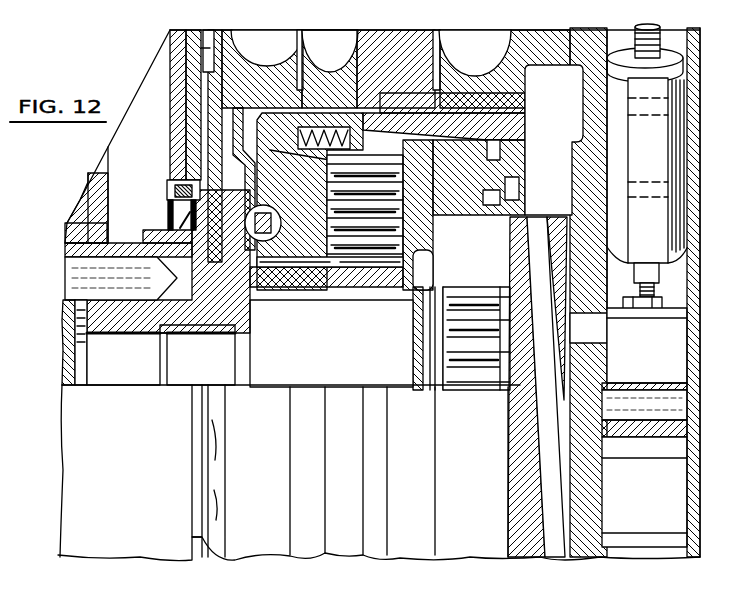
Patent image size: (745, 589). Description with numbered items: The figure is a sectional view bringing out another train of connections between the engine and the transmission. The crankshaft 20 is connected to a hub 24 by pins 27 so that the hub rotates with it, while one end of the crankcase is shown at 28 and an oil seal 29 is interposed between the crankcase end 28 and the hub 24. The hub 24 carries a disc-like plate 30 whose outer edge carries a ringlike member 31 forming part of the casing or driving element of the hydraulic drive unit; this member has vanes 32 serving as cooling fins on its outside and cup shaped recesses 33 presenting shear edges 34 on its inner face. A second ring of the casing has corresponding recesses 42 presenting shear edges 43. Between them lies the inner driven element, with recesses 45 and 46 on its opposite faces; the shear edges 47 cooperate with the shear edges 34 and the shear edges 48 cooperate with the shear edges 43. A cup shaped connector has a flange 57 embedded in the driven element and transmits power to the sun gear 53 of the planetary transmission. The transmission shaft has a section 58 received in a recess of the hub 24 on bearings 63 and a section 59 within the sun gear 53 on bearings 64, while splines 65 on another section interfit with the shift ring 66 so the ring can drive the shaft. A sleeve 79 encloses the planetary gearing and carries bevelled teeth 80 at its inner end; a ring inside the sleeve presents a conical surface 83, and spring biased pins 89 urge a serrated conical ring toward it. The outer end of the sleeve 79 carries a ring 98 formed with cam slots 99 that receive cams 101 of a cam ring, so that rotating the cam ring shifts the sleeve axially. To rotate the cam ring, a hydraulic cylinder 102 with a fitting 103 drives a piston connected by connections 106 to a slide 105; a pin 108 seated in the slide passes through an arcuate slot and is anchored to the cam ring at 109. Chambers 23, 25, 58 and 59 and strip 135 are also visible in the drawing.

The crankshaft 20 is at (66, 320).
The chamber 23 is at (123, 359).
The hub 24 is at (127, 250).
The plate 25 is at (138, 335).
The pins 27 is at (70, 268).
The crankcase end 28 is at (173, 127).
The oil seal 29 is at (170, 200).
The disc-like plate 30 is at (213, 92).
The ringlike member 31 is at (215, 30).
The vanes 32 is at (212, 48).
The cup shaped recesses 33 is at (245, 30).
The shear edges 34 is at (297, 32).
The cup shaped recesses 42 is at (490, 32).
The shear edges 43 is at (462, 23).
The recesses 45 is at (350, 23).
The recesses 46 is at (392, 23).
The shear edges 47 is at (302, 32).
The shear edges 48 is at (436, 32).
The sun gear 53 is at (283, 290).
The flange 57 is at (358, 77).
The shaft section 58 is at (201, 359).
The shaft section 59 is at (331, 343).
The bearings 63 is at (200, 334).
The bearings 64 is at (322, 292).
The splines 65 is at (446, 334).
The shift ring 66 is at (515, 200).
The sleeve 79 is at (500, 103).
The bevelled teeth 80 is at (270, 115).
The conical surface 83 is at (505, 125).
The spring biased pins 89 is at (382, 95).
The ring 98 is at (548, 68).
The cam slots 99 is at (519, 203).
The cams 101 is at (540, 391).
The hydraulic cylinder 102 is at (675, 195).
The fitting 103 is at (655, 40).
The slide 105 is at (668, 350).
The connections 106 is at (652, 300).
The pin 108 is at (672, 415).
The anchorage 109 is at (552, 411).
The strip 135 is at (412, 297).